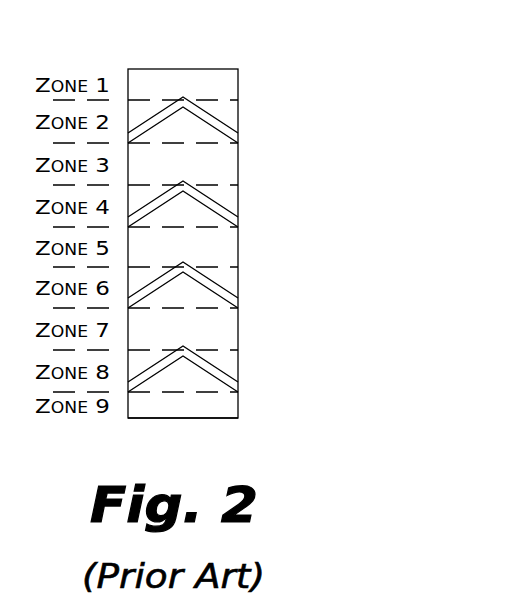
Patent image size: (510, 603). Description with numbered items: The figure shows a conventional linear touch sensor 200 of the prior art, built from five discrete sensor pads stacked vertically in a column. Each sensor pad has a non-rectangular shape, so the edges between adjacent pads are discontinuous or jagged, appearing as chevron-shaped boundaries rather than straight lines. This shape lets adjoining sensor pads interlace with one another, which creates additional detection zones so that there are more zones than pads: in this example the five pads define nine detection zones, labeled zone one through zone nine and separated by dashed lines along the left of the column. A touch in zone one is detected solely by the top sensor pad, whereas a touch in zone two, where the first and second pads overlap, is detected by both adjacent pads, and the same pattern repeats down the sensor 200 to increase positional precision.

The conventional linear touch sensor 200 is at (215, 55).